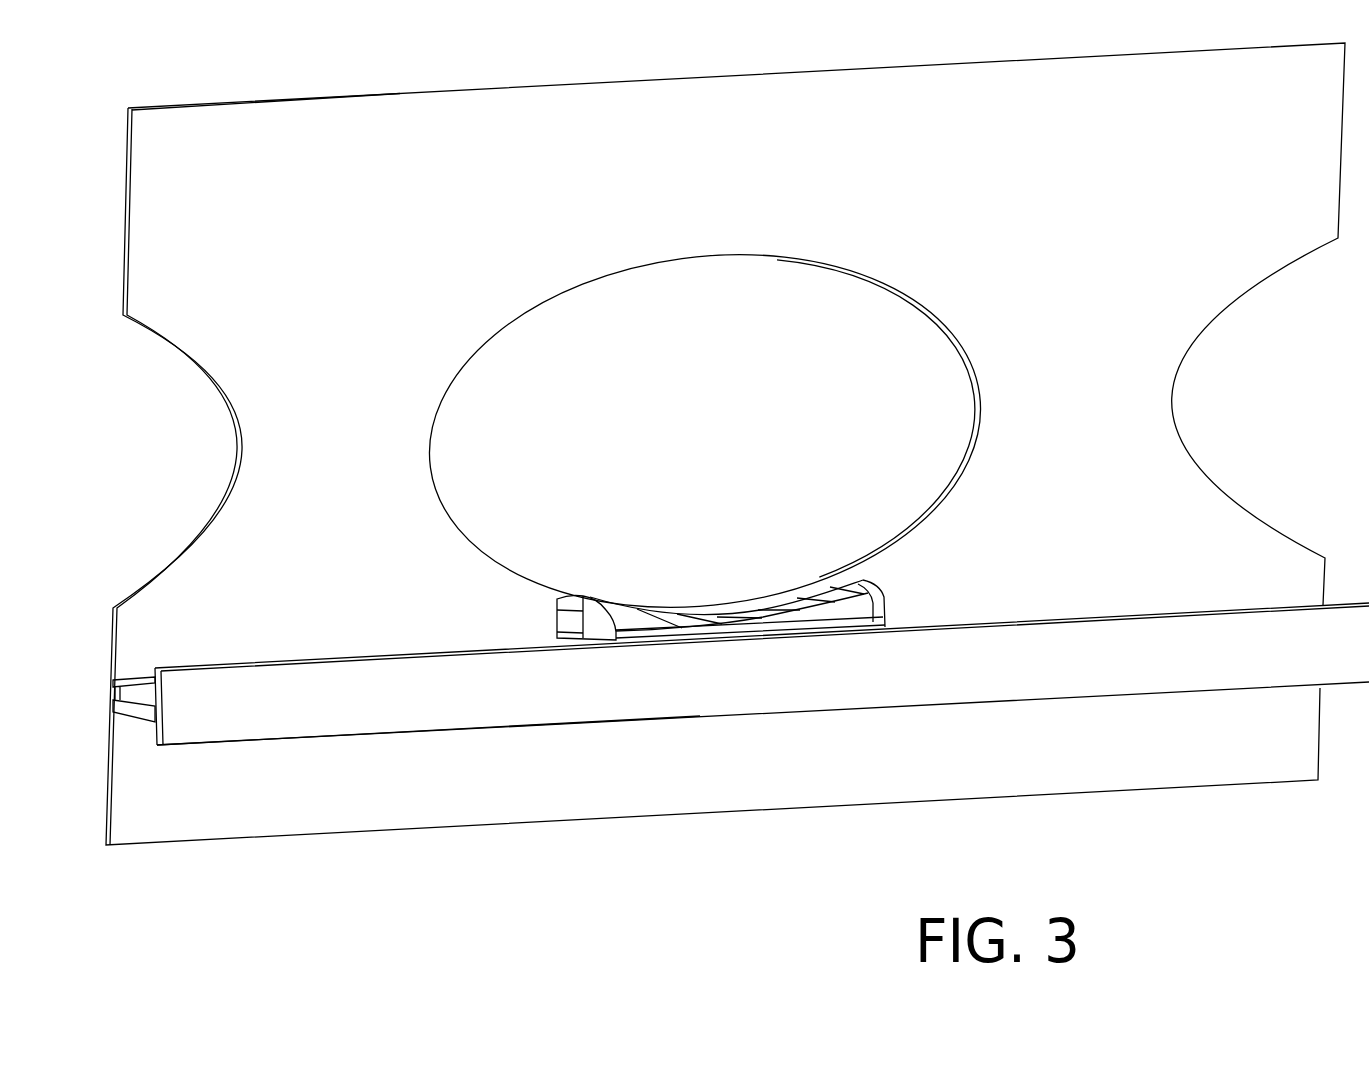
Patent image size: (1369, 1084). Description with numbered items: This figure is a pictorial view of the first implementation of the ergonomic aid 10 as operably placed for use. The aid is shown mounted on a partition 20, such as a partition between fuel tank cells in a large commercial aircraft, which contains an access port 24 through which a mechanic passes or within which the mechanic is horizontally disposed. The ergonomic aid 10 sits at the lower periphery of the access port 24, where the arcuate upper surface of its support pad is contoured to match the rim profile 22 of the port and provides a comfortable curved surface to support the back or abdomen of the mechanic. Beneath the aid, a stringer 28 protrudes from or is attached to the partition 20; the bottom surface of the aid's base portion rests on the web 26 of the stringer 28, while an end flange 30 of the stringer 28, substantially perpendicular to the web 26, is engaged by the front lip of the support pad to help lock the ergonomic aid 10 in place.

The ergonomic aid 10 is at (917, 573).
The partition 20 is at (1133, 221).
The rim profile 22 is at (544, 585).
The access port 24 is at (870, 378).
The web 26 is at (135, 722).
The stringer 28 is at (344, 786).
The end flange 30 is at (460, 685).